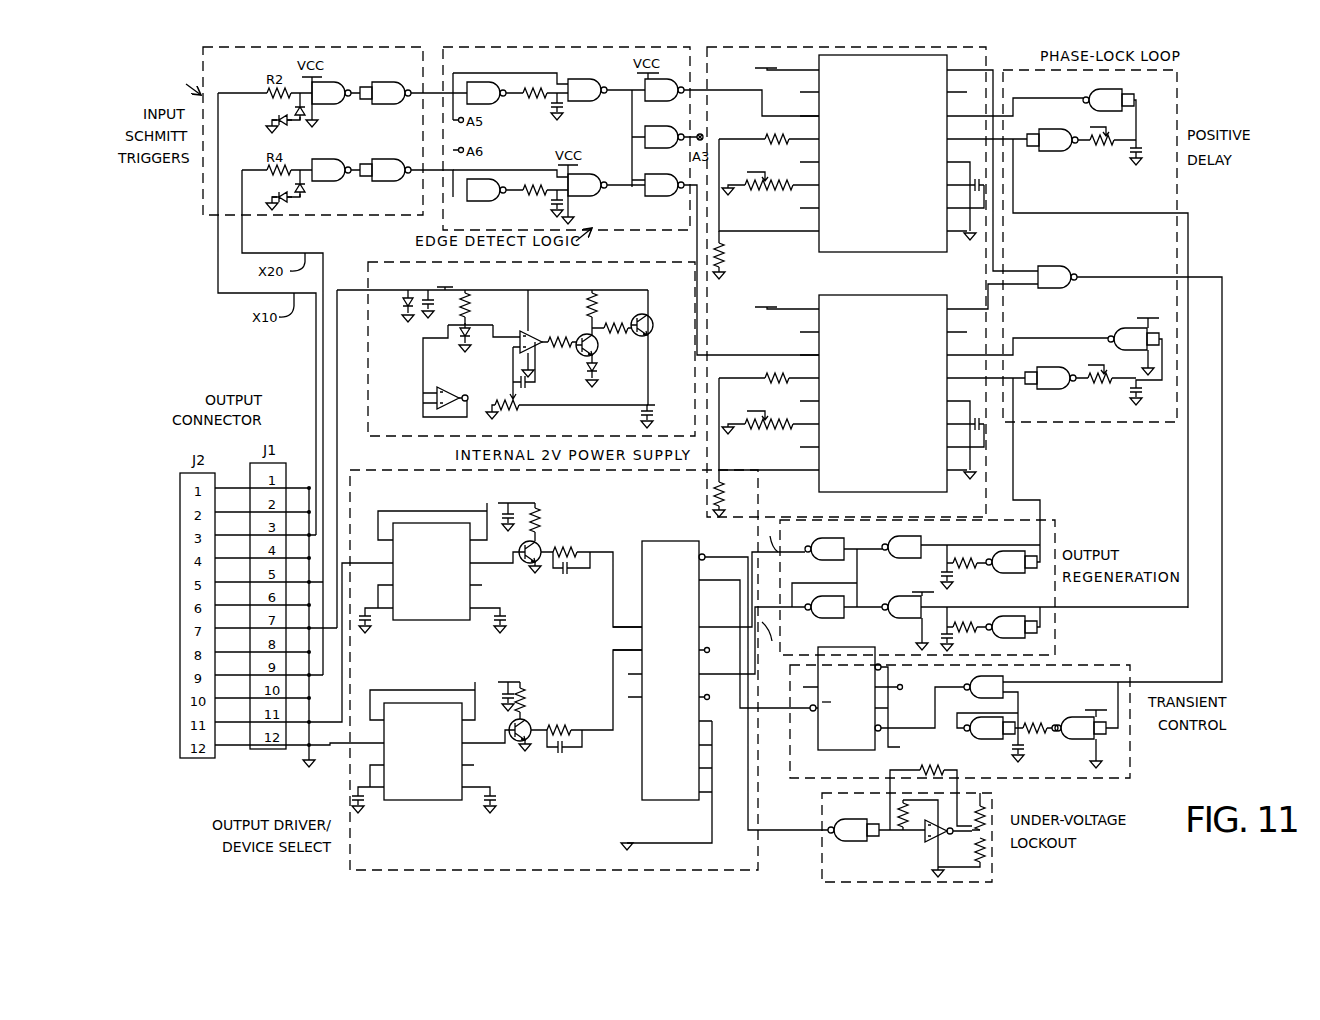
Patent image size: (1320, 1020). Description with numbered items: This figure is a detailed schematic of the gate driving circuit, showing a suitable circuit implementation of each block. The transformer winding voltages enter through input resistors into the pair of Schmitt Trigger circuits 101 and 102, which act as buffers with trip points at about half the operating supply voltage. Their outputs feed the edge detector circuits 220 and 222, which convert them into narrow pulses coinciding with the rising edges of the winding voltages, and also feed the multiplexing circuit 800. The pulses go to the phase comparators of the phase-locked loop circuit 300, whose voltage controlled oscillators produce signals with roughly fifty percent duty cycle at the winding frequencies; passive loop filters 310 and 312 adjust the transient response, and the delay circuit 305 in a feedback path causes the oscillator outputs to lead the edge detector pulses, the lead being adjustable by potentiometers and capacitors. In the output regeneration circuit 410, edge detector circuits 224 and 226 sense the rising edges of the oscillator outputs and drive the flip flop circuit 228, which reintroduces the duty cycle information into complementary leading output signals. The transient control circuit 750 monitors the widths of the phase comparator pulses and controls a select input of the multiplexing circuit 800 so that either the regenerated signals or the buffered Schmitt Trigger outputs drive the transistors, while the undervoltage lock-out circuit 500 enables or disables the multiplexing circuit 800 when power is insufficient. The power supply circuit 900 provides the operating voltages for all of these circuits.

The Schmitt Trigger circuit 101 is at (383, 77).
The Schmitt Trigger circuit 102 is at (383, 150).
The edge detector circuit 220 is at (538, 68).
The edge detector circuit 222 is at (538, 158).
The edge detector circuit 224 is at (988, 534).
The edge detector circuit 226 is at (1020, 606).
The flip flop circuit 228 is at (830, 619).
The phase-locked loop circuit 300 is at (990, 56).
The delay circuit 305 is at (1192, 172).
The passive loop filter 310 is at (725, 261).
The passive loop filter 312 is at (725, 500).
The output regeneration circuit 410 is at (970, 586).
The undervoltage lock-out circuit 500 is at (992, 882).
The transient control circuit 750 is at (1133, 763).
The multiplexing circuit 800 is at (351, 808).
The power supply circuit 900 is at (403, 440).